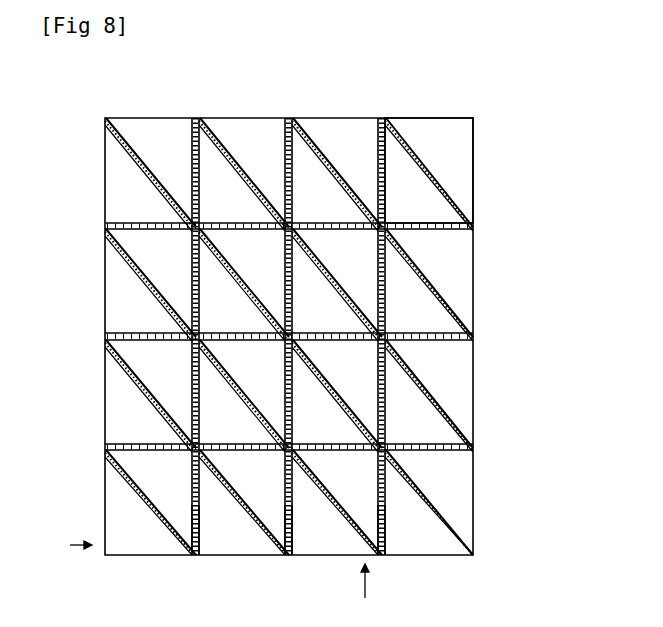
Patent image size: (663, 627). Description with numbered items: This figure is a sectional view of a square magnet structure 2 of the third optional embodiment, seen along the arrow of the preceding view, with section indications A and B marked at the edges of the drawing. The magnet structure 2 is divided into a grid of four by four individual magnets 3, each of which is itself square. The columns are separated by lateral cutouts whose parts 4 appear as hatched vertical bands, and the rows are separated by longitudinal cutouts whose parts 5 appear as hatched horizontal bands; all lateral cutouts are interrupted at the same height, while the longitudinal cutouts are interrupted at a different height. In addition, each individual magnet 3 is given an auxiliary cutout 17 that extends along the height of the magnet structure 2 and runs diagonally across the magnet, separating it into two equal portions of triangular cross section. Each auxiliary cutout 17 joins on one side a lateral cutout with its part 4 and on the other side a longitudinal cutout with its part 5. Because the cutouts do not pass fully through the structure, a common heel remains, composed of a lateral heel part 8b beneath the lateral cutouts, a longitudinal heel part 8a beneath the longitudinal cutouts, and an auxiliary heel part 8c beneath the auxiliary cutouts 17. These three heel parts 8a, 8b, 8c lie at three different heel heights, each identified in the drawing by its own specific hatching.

The magnet structure 2 is at (486, 189).
The individual magnet 3 is at (462, 152).
The lateral cutout part 4 is at (192, 518).
The longitudinal cutout part 5 is at (152, 232).
The longitudinal heel part 8a is at (105, 227).
The lateral heel part 8b is at (191, 158).
The auxiliary heel part 8c is at (232, 160).
The auxiliary cutout 17 is at (445, 290).
The section line A is at (69, 549).
The section line B is at (358, 590).